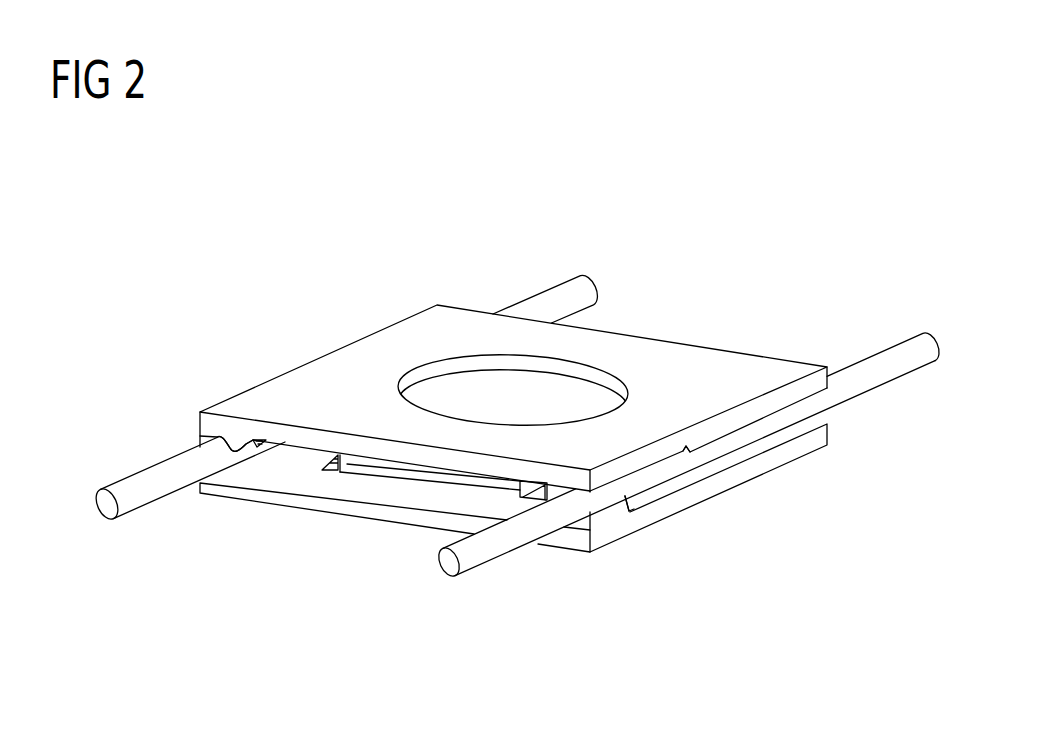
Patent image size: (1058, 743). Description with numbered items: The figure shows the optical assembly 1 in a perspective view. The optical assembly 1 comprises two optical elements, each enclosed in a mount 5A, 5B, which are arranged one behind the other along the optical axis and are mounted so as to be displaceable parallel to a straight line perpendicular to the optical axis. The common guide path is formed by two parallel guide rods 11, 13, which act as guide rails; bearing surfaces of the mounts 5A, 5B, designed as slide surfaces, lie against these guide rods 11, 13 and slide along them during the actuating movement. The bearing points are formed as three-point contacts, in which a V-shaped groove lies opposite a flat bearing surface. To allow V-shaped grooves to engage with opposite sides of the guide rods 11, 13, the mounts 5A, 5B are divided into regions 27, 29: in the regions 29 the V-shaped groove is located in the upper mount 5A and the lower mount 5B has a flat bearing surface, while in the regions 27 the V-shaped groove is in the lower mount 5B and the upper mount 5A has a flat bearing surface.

The optical assembly 1 is at (529, 218).
The mount 5A is at (699, 368).
The mount 5B is at (284, 498).
The guide rod 11 is at (127, 483).
The guide rod 13 is at (908, 353).
The region 27 is at (300, 335).
The region 29 is at (402, 297).